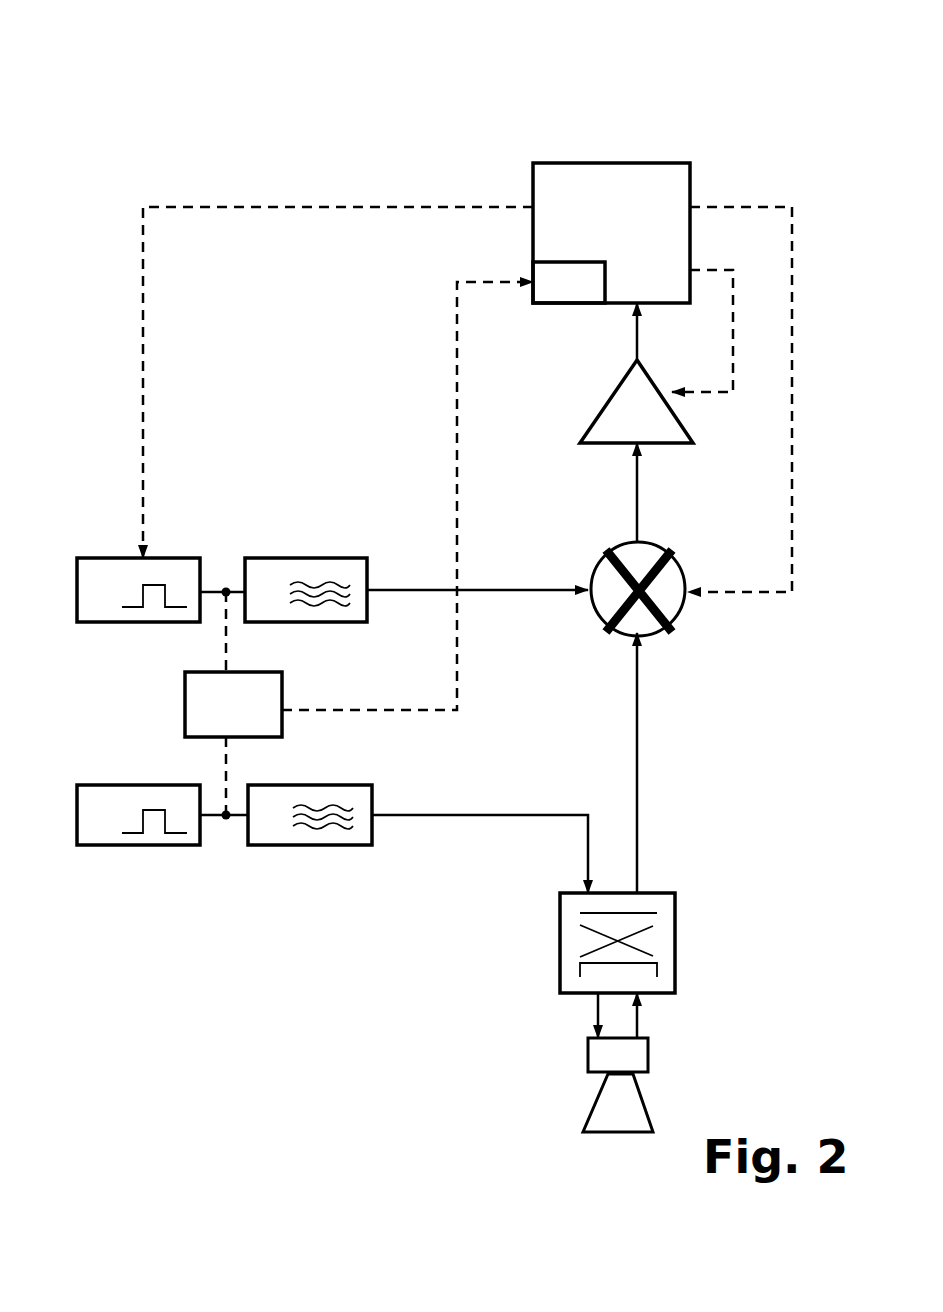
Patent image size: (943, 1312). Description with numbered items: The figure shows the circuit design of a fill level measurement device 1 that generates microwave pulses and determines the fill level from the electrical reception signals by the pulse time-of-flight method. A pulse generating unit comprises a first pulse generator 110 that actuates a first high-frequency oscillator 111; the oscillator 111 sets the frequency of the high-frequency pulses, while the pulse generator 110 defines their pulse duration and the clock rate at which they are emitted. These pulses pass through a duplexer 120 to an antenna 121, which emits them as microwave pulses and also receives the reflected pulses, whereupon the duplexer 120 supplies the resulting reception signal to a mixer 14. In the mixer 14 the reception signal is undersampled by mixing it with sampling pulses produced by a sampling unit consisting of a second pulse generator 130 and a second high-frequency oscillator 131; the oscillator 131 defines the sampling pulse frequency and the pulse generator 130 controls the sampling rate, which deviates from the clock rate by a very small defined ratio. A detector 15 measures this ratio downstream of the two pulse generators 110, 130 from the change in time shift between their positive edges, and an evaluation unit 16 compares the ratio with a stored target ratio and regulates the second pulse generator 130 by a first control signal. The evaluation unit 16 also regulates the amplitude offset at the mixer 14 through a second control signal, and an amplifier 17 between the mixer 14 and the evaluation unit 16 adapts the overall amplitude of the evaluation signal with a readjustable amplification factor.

The fill level measurement device 1 is at (178, 112).
The mixer 14 is at (630, 634).
The detector 15 is at (185, 706).
The evaluation unit 16 is at (633, 163).
The amplifier 17 is at (595, 423).
The first pulse generator 110 is at (168, 845).
The first high-frequency oscillator 111 is at (306, 845).
The duplexer 120 is at (560, 958).
The antenna 121 is at (596, 1105).
The second pulse generator 130 is at (118, 558).
The second high-frequency oscillator 131 is at (288, 558).